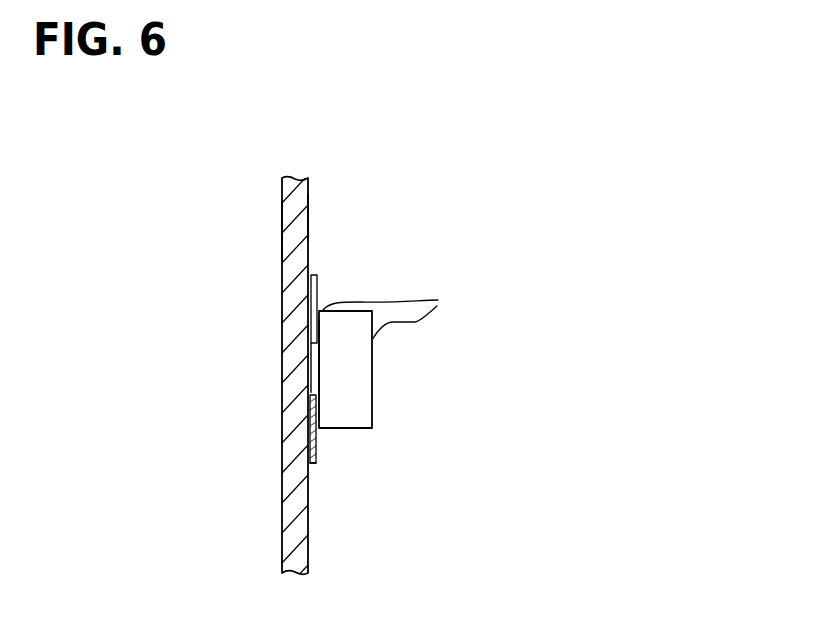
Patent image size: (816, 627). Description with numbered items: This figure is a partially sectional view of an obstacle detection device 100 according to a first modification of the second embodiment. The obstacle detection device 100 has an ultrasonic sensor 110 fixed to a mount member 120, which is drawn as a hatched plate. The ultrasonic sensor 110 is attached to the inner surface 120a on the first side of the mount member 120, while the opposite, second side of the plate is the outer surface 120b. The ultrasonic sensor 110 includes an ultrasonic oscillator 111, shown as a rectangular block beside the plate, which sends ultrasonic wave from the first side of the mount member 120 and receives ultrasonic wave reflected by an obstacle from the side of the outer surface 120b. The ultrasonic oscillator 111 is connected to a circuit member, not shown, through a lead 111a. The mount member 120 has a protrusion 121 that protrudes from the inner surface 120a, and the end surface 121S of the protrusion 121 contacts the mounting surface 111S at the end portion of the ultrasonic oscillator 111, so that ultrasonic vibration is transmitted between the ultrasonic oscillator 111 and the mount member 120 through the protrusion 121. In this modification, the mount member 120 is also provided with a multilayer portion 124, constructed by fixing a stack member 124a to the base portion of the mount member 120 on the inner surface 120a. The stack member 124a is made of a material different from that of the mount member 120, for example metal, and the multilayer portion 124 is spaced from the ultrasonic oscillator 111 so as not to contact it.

The obstacle detection device 100 is at (411, 258).
The ultrasonic sensor 110 is at (409, 364).
The ultrasonic oscillator 111 is at (362, 393).
The mounting surface 111S is at (314, 333).
The lead 111a is at (438, 285).
The mount member 120 is at (270, 192).
The inner surface 120a is at (308, 217).
The outer surface 120b is at (282, 240).
The protrusion 121 is at (318, 378).
The end surface 121S is at (318, 377).
The multilayer portion 124 is at (321, 447).
The stack member 124a is at (314, 463).